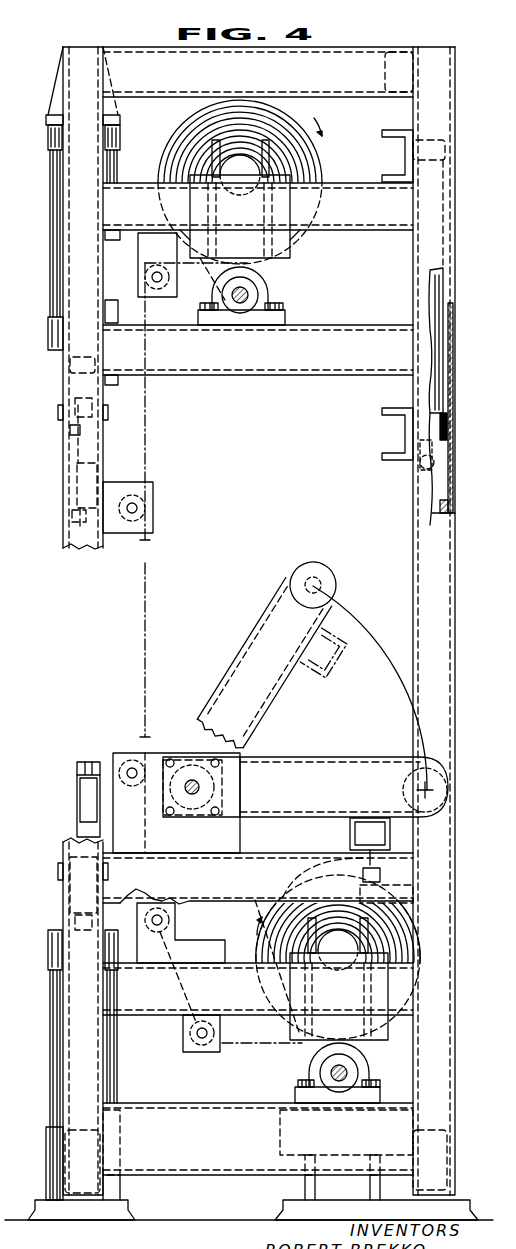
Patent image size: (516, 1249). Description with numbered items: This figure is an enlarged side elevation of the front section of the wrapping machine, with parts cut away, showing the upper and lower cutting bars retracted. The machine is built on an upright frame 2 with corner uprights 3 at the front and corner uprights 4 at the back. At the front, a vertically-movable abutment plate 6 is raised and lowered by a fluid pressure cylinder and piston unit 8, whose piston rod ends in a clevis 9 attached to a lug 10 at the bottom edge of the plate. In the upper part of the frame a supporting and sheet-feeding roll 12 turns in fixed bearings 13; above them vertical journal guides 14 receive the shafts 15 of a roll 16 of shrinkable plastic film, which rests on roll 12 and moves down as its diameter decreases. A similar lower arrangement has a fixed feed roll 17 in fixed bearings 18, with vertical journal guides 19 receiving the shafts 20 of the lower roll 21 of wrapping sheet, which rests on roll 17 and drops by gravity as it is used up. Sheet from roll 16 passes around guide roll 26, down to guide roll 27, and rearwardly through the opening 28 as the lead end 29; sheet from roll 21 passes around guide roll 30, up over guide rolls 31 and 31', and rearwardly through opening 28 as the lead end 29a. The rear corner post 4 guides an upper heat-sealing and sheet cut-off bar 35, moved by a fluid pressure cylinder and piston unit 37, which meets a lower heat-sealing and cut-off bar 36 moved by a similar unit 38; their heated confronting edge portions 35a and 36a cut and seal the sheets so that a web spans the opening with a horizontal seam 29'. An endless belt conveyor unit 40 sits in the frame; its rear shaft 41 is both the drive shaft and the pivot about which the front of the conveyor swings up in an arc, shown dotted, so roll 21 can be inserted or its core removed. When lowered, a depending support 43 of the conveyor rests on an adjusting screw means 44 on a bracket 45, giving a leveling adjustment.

The upright frame 2 is at (464, 71).
The corner upright 3 is at (445, 123).
The corner upright 4 is at (72, 260).
The abutment plate 6 is at (473, 381).
The fluid pressure cylinder and piston unit 8 is at (444, 292).
The clevis 9 is at (412, 470).
The lug 10 is at (448, 491).
The supporting and sheet-feeding roll 12 is at (268, 283).
The fixed bearing 13 is at (252, 322).
The vertical journal guide 14 is at (290, 262).
The shaft 15 is at (240, 183).
The roll of wrapping film 16 is at (322, 166).
The fixed feed roll 17 is at (368, 1066).
The fixed bearing 18 is at (343, 1088).
The vertical journal guide 19 is at (290, 1037).
The shaft 20 is at (338, 962).
The roll of wrapping sheet 21 is at (262, 951).
The guide roll 26 is at (162, 292).
The guide roll 27 is at (148, 507).
The opening 28 is at (82, 641).
The lead end of upper wrapping sheet 29 is at (58, 466).
The horizontal seam 29' is at (171, 500).
The lead end of lower wrapping sheet 29a is at (42, 763).
The guide roll 30 is at (196, 1053).
The guide roll 31 is at (181, 962).
The guide roll 31' is at (170, 788).
The upper heat-sealing and sheet cut-off bar 35 is at (73, 492).
The confronting edge portion 35a is at (70, 525).
The lower heat-sealing and cut-off bar 36 is at (78, 806).
The confronting edge portion 36a is at (77, 768).
The fluid pressure cylinder and piston unit 37 is at (55, 293).
The fluid pressure cylinder and piston unit 38 is at (55, 1004).
The endless belt conveyor unit 40 is at (237, 664).
The rear shaft 41 is at (200, 786).
The depending support 43 is at (351, 835).
The adjusting screw means 44 is at (355, 861).
The bracket 45 is at (413, 897).